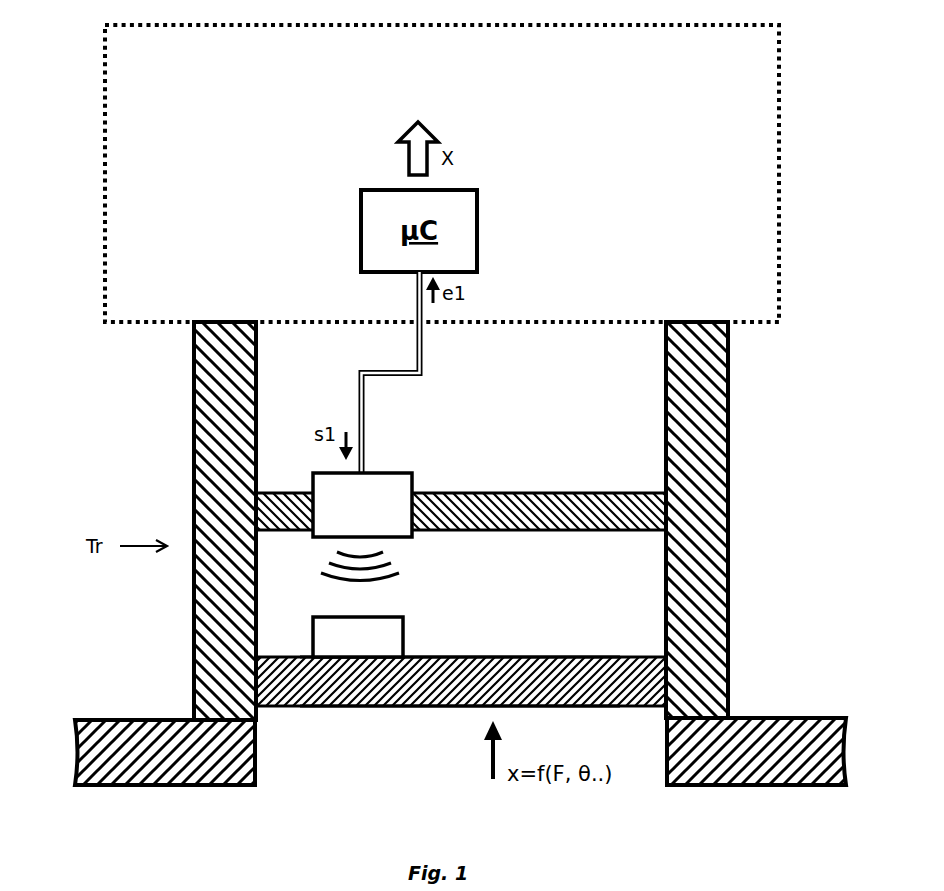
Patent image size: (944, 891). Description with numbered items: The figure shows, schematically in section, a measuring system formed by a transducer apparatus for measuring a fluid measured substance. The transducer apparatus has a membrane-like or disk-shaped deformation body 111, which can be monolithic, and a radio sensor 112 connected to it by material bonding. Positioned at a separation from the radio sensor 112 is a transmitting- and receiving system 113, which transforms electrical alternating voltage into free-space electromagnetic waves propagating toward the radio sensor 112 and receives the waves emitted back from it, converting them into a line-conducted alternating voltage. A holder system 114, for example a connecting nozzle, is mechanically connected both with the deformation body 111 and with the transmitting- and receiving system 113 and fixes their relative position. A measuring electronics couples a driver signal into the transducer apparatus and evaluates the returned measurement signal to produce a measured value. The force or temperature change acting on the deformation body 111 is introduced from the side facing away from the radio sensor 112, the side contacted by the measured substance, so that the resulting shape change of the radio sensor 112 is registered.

The deformation body 111 is at (461, 681).
The radio sensor 112 is at (358, 637).
The transmitting- and receiving system 113 is at (362, 527).
The holder system 114 is at (700, 559).